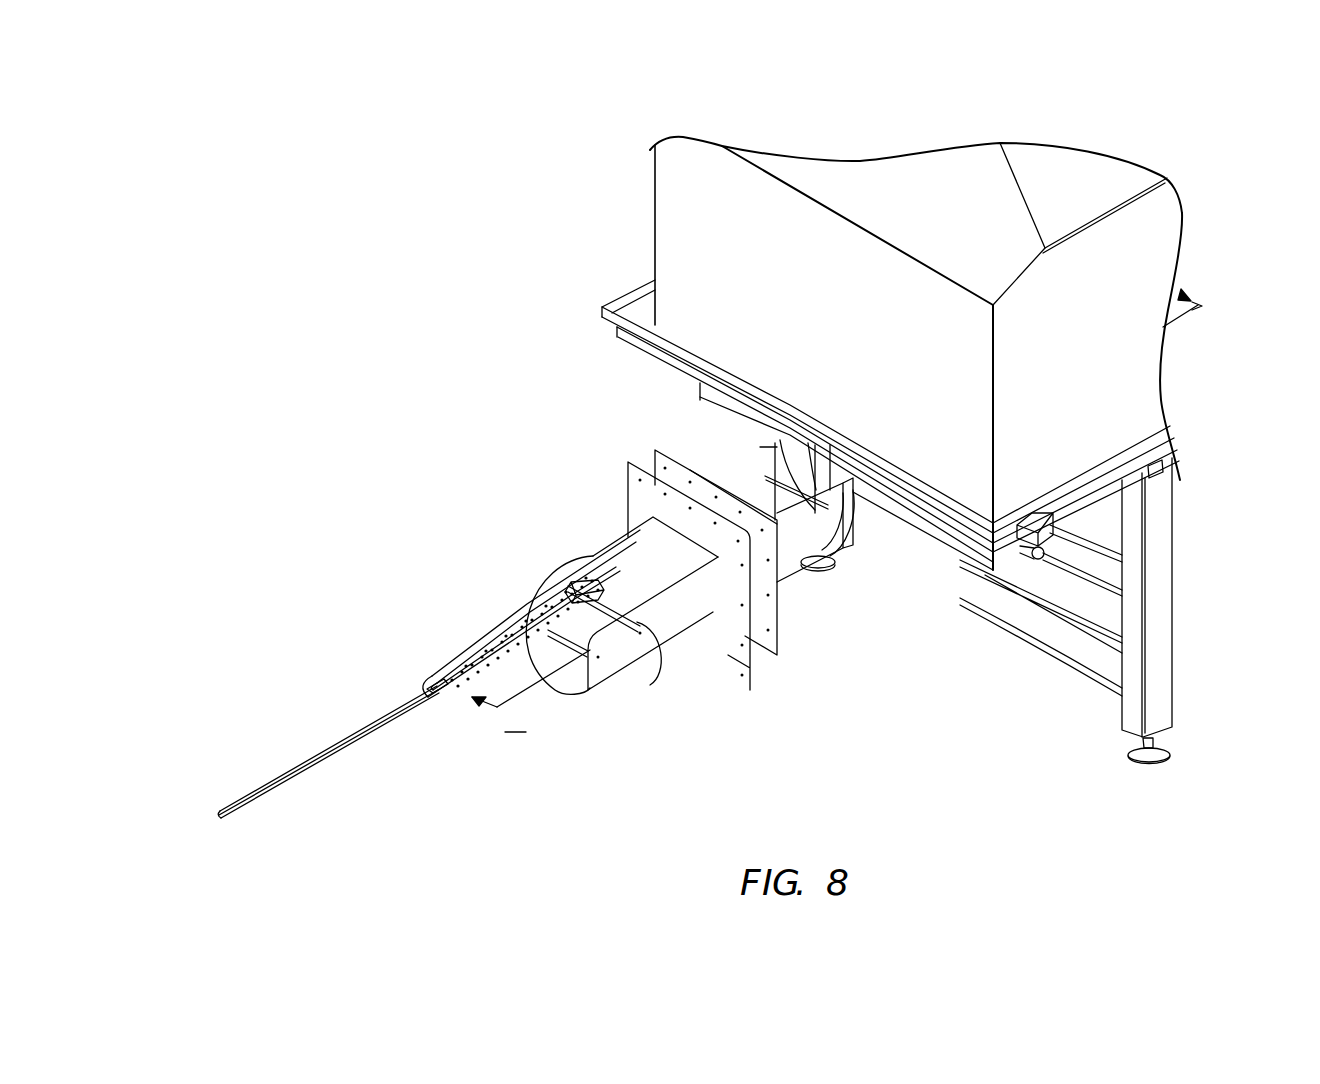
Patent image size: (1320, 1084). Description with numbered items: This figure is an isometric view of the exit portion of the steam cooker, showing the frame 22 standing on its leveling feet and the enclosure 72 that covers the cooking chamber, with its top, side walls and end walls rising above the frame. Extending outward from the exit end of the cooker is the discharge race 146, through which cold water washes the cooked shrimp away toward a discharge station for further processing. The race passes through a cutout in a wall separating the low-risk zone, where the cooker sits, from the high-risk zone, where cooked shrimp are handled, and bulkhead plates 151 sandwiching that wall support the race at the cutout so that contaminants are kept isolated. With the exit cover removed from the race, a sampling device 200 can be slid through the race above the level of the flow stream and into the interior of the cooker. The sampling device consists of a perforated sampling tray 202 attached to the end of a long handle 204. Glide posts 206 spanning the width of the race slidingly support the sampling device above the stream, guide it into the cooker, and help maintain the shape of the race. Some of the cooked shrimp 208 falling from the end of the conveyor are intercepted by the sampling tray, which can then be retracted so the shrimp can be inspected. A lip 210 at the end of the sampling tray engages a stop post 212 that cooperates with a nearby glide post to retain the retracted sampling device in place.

The frame 22 is at (1172, 600).
The enclosure 72 is at (1163, 267).
The discharge race 146 is at (602, 677).
The bulkhead plates 151 is at (630, 485).
The sampling device 200 is at (427, 685).
The perforated sampling tray 202 is at (457, 663).
The long handle 204 is at (333, 752).
The glide posts 206 is at (808, 574).
The cooked shrimp 208 is at (550, 595).
The lip 210 is at (597, 580).
The stop post 212 is at (653, 668).